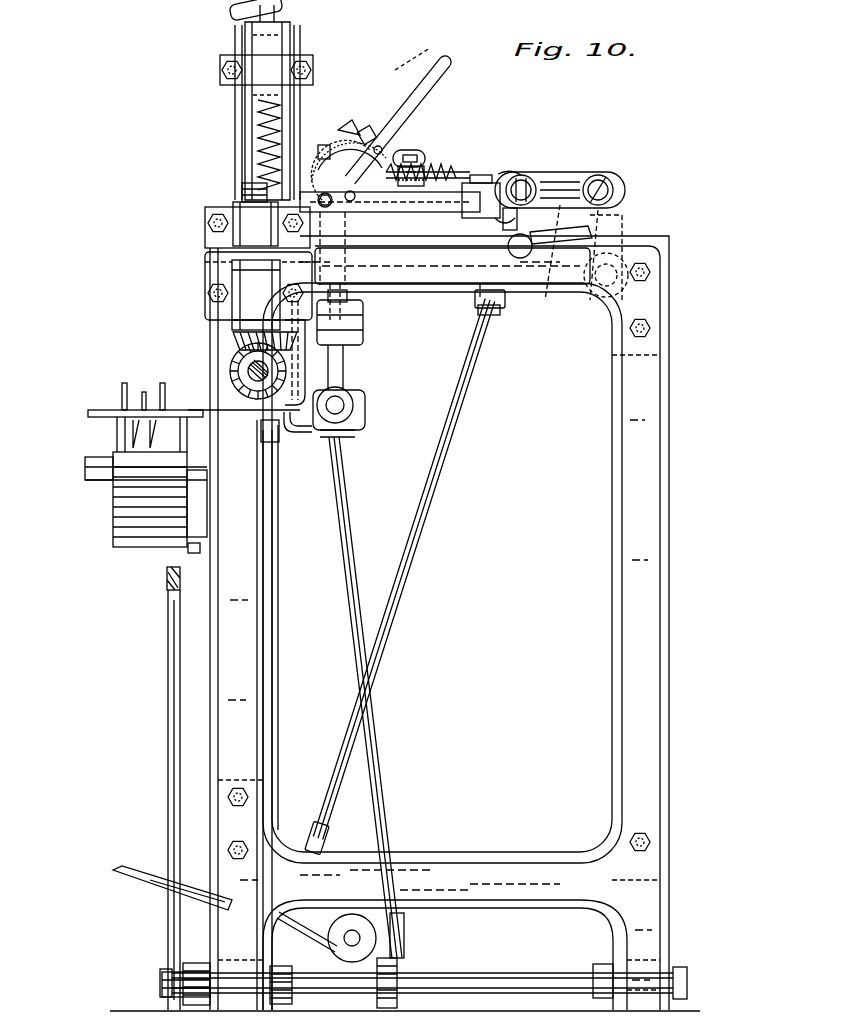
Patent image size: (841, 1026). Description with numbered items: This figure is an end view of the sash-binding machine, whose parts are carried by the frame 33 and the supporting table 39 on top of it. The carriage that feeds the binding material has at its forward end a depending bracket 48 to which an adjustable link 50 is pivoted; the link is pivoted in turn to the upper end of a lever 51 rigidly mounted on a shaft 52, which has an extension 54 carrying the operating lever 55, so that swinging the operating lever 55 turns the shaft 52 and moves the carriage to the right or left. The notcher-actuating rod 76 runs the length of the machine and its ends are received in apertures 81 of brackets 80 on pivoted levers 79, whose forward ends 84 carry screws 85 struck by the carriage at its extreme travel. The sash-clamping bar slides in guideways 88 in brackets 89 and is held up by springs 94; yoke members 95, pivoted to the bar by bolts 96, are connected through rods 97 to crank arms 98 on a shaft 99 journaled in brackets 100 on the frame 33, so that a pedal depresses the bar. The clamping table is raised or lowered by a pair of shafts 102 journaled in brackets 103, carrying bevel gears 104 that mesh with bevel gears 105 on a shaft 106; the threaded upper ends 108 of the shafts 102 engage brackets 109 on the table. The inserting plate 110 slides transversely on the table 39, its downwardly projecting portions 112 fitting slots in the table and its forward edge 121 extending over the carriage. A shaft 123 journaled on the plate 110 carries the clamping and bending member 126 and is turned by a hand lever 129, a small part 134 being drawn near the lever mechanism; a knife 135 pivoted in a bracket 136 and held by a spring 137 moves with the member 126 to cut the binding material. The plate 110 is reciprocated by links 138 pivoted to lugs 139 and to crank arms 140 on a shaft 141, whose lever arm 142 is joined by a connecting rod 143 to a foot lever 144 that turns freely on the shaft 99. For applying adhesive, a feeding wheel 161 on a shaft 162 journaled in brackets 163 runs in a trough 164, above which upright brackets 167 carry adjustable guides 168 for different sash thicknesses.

The frame 33 is at (268, 672).
The supporting table 39 is at (450, 222).
The depending bracket 48 is at (365, 318).
The adjustable link 50 is at (345, 370).
The lever 51 is at (380, 758).
The shaft 52 is at (445, 972).
The extension 54 is at (162, 983).
The operating lever 55 is at (168, 712).
The longitudinally reciprocating rod 76 is at (420, 168).
The levers 79 is at (516, 176).
The brackets 80 is at (428, 166).
The apertures 81 is at (424, 155).
The forward ends 84 is at (352, 202).
The screws 85 is at (329, 213).
The guideways 88 is at (245, 46).
The brackets 89 is at (252, 135).
The springs 94 is at (280, 125).
The yoke members 95 is at (290, 434).
The bolts 96 is at (311, 70).
The rods 97 is at (292, 514).
The crank arms 98 is at (290, 955).
The shaft 99 is at (352, 960).
The brackets 100 is at (404, 928).
The shafts 102 is at (205, 258).
The brackets 103 is at (210, 284).
The bevel gears 104 is at (233, 340).
The bevel gears 105 is at (230, 365).
The shaft 106 is at (280, 442).
The upper ends 108 is at (242, 188).
The brackets 109 is at (205, 222).
The plate 110 is at (468, 183).
The downwardly projecting portions 112 is at (519, 233).
The forward edge 121 is at (392, 130).
The shaft 123 is at (390, 238).
The clamping and bending member 126 is at (330, 145).
The hand lever 129 is at (446, 80).
The pivot pin 134 is at (382, 150).
The knife 135 is at (322, 150).
The bracket 136 is at (350, 120).
The spring 137 is at (367, 128).
The links 138 is at (580, 182).
The lugs 139 is at (528, 180).
The crank arms 140 is at (606, 196).
The shaft 141 is at (582, 310).
The lever arm 142 is at (532, 232).
The connecting rod 143 is at (448, 420).
The foot lever 144 is at (148, 893).
The feeding wheel 161 is at (154, 450).
The shaft 162 is at (130, 450).
The brackets 163 is at (194, 554).
The trough 164 is at (120, 497).
The upright brackets 167 is at (108, 420).
The guides 168 is at (127, 395).